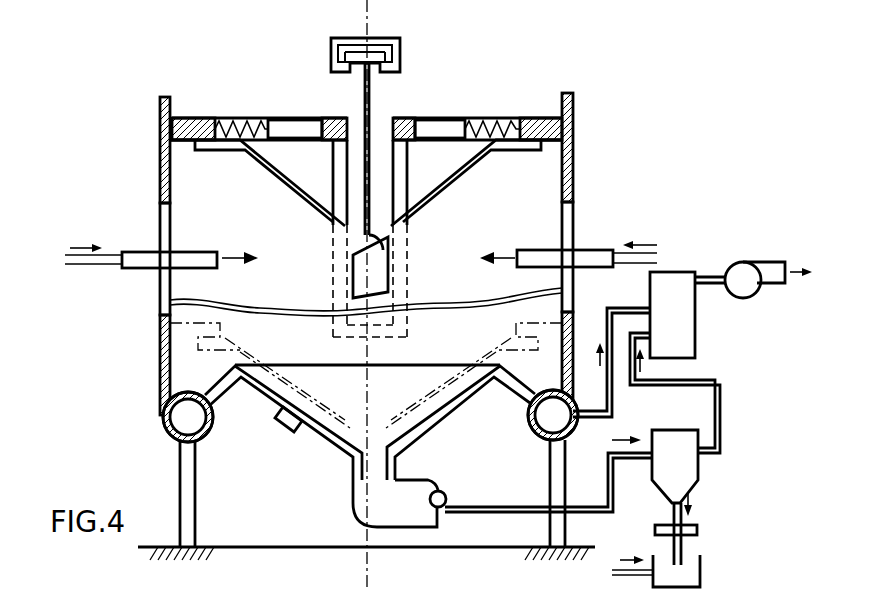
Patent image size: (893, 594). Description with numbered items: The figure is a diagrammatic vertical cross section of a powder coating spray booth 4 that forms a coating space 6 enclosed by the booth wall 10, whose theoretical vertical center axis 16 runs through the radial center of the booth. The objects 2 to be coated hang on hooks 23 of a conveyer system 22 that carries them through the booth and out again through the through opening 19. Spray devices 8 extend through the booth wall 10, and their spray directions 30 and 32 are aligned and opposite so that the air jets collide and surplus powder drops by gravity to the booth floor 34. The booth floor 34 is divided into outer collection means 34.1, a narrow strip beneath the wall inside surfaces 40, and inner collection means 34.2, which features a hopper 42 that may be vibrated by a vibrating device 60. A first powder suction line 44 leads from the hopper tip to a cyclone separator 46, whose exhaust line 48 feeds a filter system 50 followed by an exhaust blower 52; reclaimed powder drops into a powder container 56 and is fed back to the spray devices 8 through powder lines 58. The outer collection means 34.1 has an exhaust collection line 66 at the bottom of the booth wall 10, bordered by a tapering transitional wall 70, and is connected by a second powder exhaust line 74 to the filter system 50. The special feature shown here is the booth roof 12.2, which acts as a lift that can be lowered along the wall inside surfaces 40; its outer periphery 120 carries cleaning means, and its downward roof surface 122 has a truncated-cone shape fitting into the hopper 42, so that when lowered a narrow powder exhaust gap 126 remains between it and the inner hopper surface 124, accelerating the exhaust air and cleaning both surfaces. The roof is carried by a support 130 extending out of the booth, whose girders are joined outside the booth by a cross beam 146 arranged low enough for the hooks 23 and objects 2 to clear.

The object 2 is at (365, 278).
The spray booth 4 is at (574, 160).
The coating space 6 is at (557, 183).
The spray device 8 is at (136, 252).
The booth wall 10 is at (573, 134).
The booth roof 12.2 is at (458, 102).
The center axis 16 is at (370, 14).
The through opening 19 is at (360, 128).
The conveyer system 22 is at (338, 54).
The hook 23 is at (369, 100).
The spray direction 30 is at (474, 251).
The spray direction 32 is at (244, 245).
The booth floor 34 is at (298, 347).
The outer collection means 34.1 is at (197, 371).
The inner collection means 34.2 is at (405, 378).
The wall inside surface 40 is at (172, 180).
The hopper 42 is at (305, 433).
The first powder suction line 44 is at (435, 476).
The cyclone separator 46 is at (698, 470).
The exhaust line 48 is at (722, 418).
The filter system 50 is at (685, 345).
The exhaust blower 52 is at (743, 262).
The powder container 56 is at (700, 570).
The powder line 58 is at (97, 265).
The vibrating device 60 is at (287, 430).
The exhaust collection line 66 is at (175, 433).
The transitional wall 70 is at (228, 386).
The second powder exhaust line 74 is at (630, 312).
The outer periphery 120 is at (552, 118).
The roof surface 122 is at (292, 185).
The inner hopper surface 124 is at (358, 456).
The powder exhaust gap 126 is at (455, 394).
The support 130 is at (330, 128).
The cross beam 146 is at (408, 332).